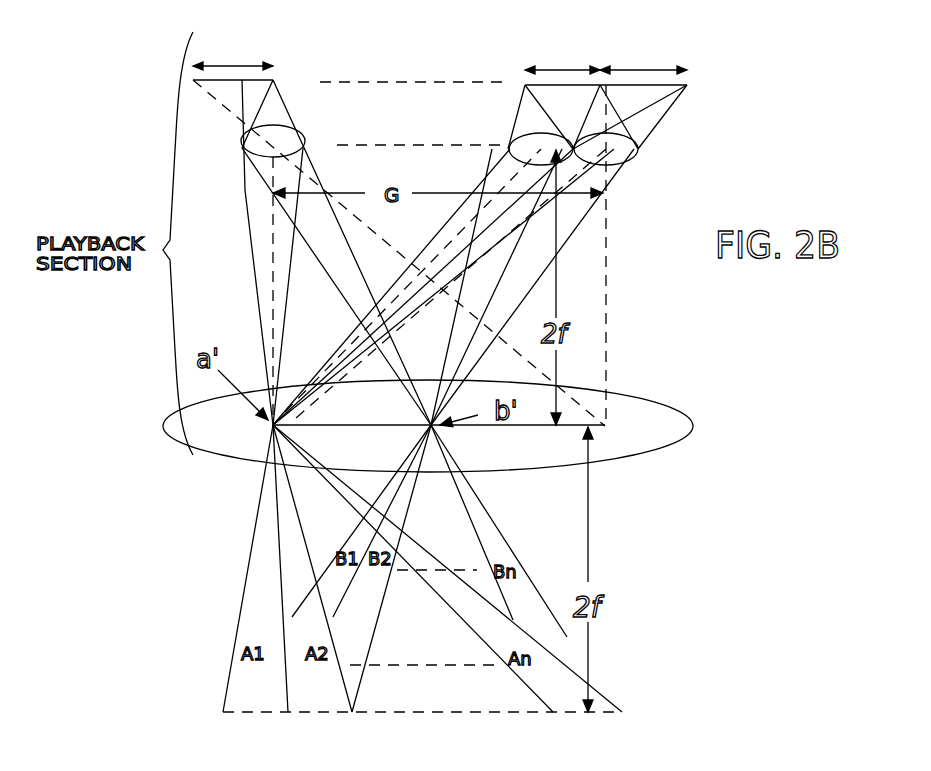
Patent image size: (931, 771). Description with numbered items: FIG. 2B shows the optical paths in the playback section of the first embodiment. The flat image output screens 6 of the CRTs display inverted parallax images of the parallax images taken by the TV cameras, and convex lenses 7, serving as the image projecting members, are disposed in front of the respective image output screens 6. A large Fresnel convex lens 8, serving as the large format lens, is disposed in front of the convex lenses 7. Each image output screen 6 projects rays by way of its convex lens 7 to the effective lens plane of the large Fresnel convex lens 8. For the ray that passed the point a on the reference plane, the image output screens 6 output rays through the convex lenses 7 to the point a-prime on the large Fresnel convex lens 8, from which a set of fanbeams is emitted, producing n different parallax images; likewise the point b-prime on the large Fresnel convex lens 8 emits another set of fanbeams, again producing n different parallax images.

The image output screen 6 is at (702, 53).
The convex lens 7 is at (655, 148).
The large Fresnel convex lens 8 is at (650, 460).